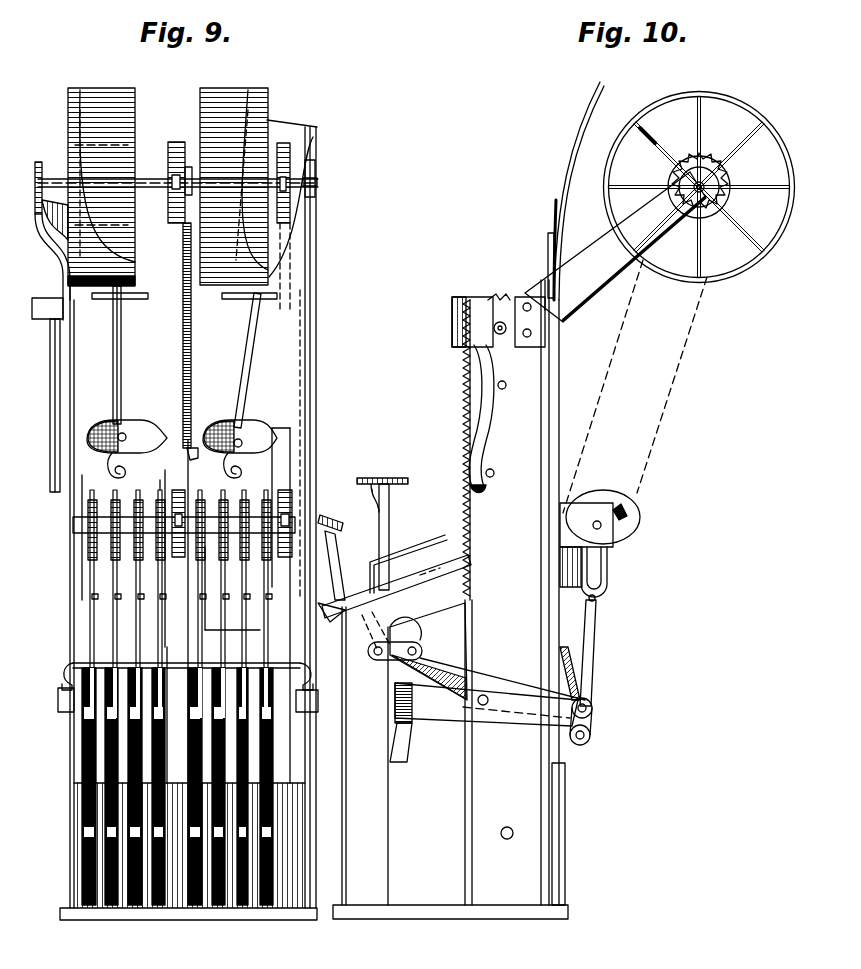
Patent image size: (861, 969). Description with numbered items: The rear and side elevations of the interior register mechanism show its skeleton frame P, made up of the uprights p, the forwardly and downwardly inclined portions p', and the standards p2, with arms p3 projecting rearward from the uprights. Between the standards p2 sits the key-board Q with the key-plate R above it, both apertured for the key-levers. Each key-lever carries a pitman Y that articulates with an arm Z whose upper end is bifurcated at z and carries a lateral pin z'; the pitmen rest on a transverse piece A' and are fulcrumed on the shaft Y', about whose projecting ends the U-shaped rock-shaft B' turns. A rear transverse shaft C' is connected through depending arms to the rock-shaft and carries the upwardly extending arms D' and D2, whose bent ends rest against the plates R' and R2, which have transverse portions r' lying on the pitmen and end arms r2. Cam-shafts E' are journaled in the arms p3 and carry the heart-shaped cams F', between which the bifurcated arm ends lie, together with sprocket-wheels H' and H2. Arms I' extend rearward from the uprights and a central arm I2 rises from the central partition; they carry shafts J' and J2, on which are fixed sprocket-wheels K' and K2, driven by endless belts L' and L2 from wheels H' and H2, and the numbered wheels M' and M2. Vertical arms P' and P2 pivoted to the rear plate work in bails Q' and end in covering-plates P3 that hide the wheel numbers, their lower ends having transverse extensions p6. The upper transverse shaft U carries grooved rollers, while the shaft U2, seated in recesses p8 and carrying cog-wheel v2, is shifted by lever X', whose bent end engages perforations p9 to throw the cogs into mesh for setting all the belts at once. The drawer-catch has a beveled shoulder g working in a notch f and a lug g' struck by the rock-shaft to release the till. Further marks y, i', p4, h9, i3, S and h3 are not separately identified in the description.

In FIG. 9, the wheel M' is at (81, 172).
In FIG. 9, the wheel M2 is at (234, 170).
In FIG. 10, the wheel M2 is at (699, 182).
In FIG. 9, the transverse shaft J2 is at (170, 170).
In FIG. 9, the sprocket-wheel K2 is at (194, 154).
In FIG. 9, the transverse shaft J' is at (308, 219).
In FIG. 10, the transverse shaft J' is at (714, 185).
In FIG. 9, the sprocket-wheel K' is at (339, 171).
In FIG. 10, the sprocket-wheel K' is at (715, 140).
In FIG. 9, the covering-plate P3 is at (292, 188).
In FIG. 10, the covering-plate P3 is at (575, 132).
In FIG. 9, the arm I' is at (174, 241).
In FIG. 10, the arm I' is at (615, 247).
In FIG. 9, the central arm I2 is at (183, 250).
In FIG. 9, the lever X' is at (42, 395).
In FIG. 9, the guide or bail Q' is at (186, 311).
In FIG. 9, the vertical arm P' is at (127, 382).
In FIG. 9, the vertical arm P2 is at (240, 385).
In FIG. 9, the endless belt L' is at (318, 445).
In FIG. 10, the endless belt L' is at (448, 450).
In FIG. 9, the transverse extension p6 is at (124, 409).
In FIG. 9, the sprocket-wheel H2 is at (172, 500).
In FIG. 10, the sprocket-wheel H2 is at (622, 546).
In FIG. 9, the sprocket-wheel H' is at (305, 513).
In FIG. 9, the notch f is at (179, 530).
In FIG. 9, the heart-shaped cam F' is at (133, 535).
In FIG. 10, the heart-shaped cam F' is at (650, 487).
In FIG. 9, the arm p3 is at (78, 528).
In FIG. 10, the arm p3 is at (530, 545).
In FIG. 9, the arm Z is at (179, 579).
In FIG. 10, the arm Z is at (598, 653).
In FIG. 9, the lateral stud or pin z' is at (149, 603).
In FIG. 10, the lateral stud or pin z' is at (616, 593).
In FIG. 9, the bifurcated end z is at (228, 589).
In FIG. 10, the bifurcated end z is at (601, 572).
In FIG. 9, the upwardly-extending arm D2 is at (173, 558).
In FIG. 9, the upwardly-extending arm D' is at (283, 620).
In FIG. 10, the upwardly-extending arm D' is at (633, 443).
In FIG. 9, the plate R2 is at (90, 640).
In FIG. 10, the plate R2 is at (595, 650).
In FIG. 9, the plate R' is at (284, 647).
In FIG. 9, the transverse shaft C' is at (168, 687).
In FIG. 10, the transverse shaft C' is at (603, 673).
In FIG. 9, the pitman Y is at (153, 786).
In FIG. 10, the pitman Y is at (408, 753).
In FIG. 9, the key bar slot y is at (273, 725).
In FIG. 9, the transverse portion r' is at (165, 777).
In FIG. 9, the arm r2 is at (273, 768).
In FIG. 10, the pin i' is at (560, 273).
In FIG. 10, the cog-wheel v2 is at (488, 297).
In FIG. 10, the elongated recess p8 is at (498, 300).
In FIG. 10, the transverse shaft U2 is at (470, 316).
In FIG. 10, the upper transverse shaft U is at (492, 419).
In FIG. 10, the supporting frame P is at (568, 592).
In FIG. 10, the endless belt L2 is at (637, 493).
In FIG. 10, the cam-shaft E' is at (625, 525).
In FIG. 10, the pin p4 is at (560, 495).
In FIG. 10, the perforation p9 is at (525, 490).
In FIG. 10, the spring h9 is at (502, 451).
In FIG. 10, the pin i3 is at (560, 556).
In FIG. 10, the upright p is at (501, 543).
In FIG. 10, the inclined portion p' is at (396, 586).
In FIG. 10, the pin S is at (392, 475).
In FIG. 10, the key-plate R is at (408, 557).
In FIG. 10, the pin h3 is at (350, 506).
In FIG. 10, the beveled shoulder g is at (330, 604).
In FIG. 10, the key-board Q is at (385, 638).
In FIG. 10, the transverse shaft Y' is at (447, 675).
In FIG. 10, the U-shaped rock-shaft B' is at (493, 714).
In FIG. 10, the beveled lug g' is at (374, 737).
In FIG. 10, the standard or upright p2 is at (354, 783).
In FIG. 10, the transverse piece A' is at (576, 834).